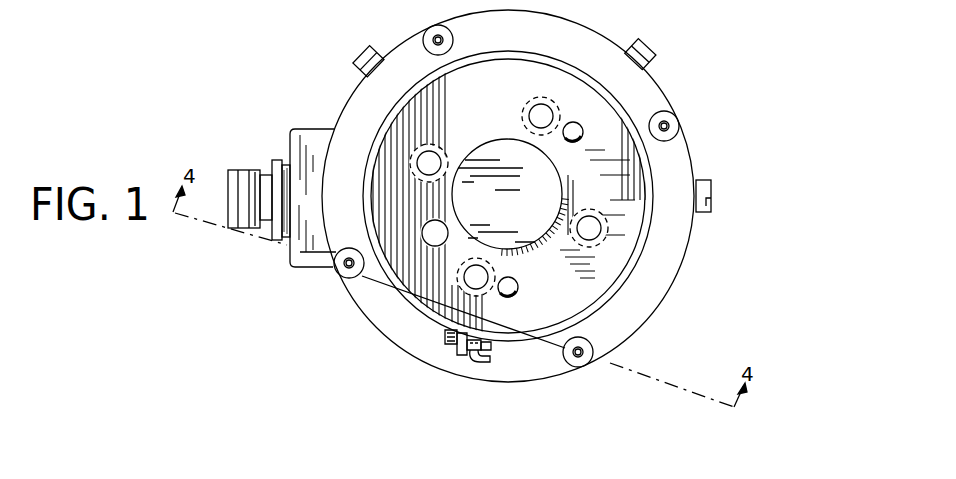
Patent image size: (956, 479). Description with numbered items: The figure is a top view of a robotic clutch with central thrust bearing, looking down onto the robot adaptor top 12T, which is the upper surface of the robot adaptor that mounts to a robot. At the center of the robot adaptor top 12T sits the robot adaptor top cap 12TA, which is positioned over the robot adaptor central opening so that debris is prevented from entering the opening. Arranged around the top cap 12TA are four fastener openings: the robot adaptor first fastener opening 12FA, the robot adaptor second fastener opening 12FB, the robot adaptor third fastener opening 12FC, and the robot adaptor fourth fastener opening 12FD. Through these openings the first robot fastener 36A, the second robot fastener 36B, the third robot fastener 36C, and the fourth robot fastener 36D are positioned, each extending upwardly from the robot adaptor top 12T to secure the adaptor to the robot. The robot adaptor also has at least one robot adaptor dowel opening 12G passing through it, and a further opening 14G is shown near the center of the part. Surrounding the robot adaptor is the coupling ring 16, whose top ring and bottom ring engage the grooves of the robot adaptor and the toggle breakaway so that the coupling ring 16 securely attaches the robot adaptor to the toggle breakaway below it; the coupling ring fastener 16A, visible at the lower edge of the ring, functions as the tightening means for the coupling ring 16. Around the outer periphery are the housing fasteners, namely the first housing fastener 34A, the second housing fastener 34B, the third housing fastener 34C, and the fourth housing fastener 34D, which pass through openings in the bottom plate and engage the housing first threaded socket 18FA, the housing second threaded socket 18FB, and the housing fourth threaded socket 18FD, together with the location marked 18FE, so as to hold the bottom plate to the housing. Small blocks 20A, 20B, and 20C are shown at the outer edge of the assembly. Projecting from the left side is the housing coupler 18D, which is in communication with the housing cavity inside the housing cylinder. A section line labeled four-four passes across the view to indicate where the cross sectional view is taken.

The robot adaptor top 12T is at (615, 168).
The robot adaptor top cap 12TA is at (540, 202).
The robot adaptor third fastener opening 12FC is at (522, 114).
The robot adaptor fourth fastener opening 12FD is at (426, 150).
The robot adaptor first fastener opening 12FA is at (494, 266).
The robot adaptor second fastener opening 12FB is at (627, 287).
The robot adaptor dowel opening 12G is at (578, 130).
The gasket hole 14G is at (577, 138).
The coupling ring 16 is at (643, 258).
The coupling ring fastener 16A is at (457, 355).
The housing coupler 18D is at (230, 200).
The housing first threaded socket 18FA is at (594, 350).
The housing second threaded socket 18FB is at (670, 128).
The housing fourth threaded socket 18FD is at (300, 258).
The fastener 18FE is at (443, 38).
The mounting block 20A is at (711, 194).
The mounting block 20B is at (658, 54).
The mounting block 20C is at (360, 52).
The first housing fastener 34A is at (675, 116).
The second housing fastener 34B is at (580, 362).
The third housing fastener 34C is at (434, 28).
The fourth housing fastener 34D is at (344, 271).
The first robot fastener 36A is at (473, 279).
The second robot fastener 36B is at (592, 227).
The third robot fastener 36C is at (546, 110).
The fourth robot fastener 36D is at (424, 159).